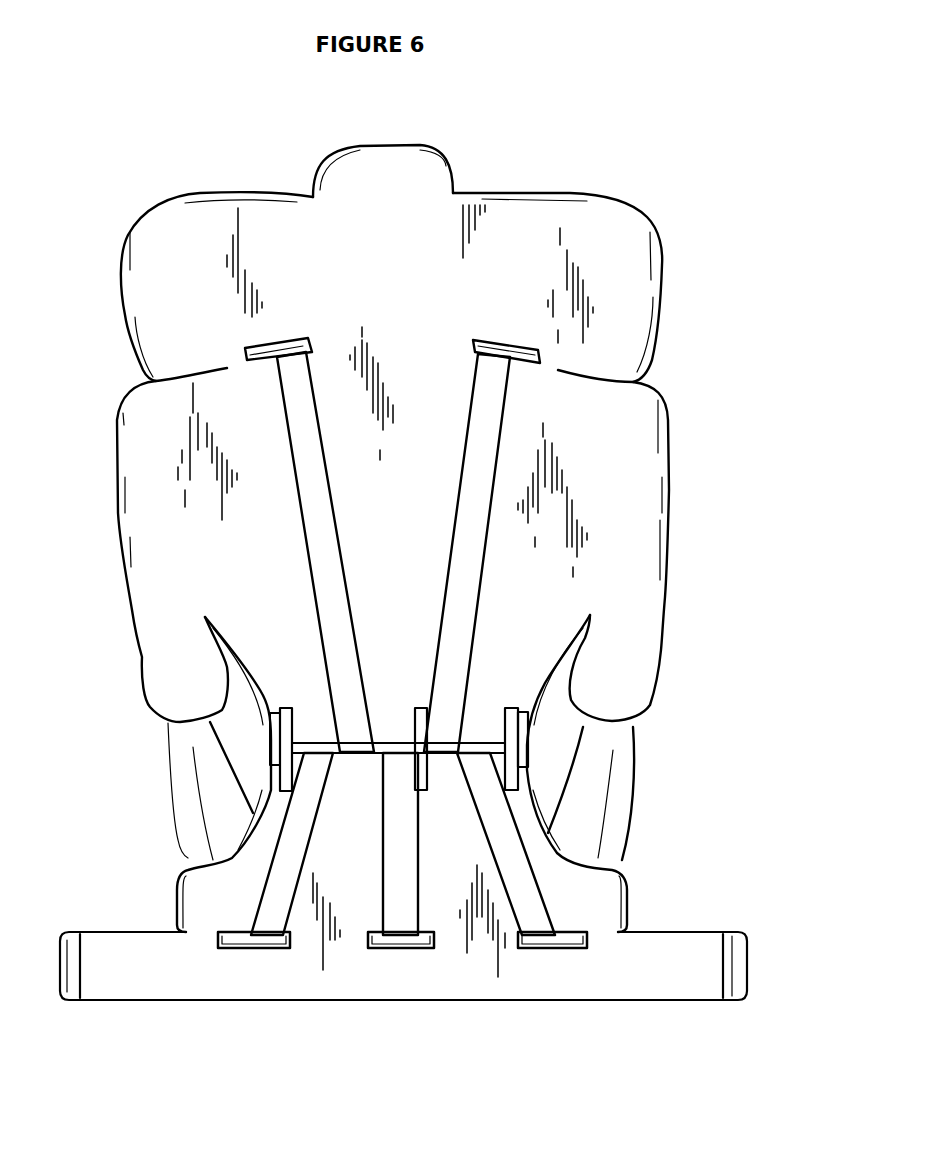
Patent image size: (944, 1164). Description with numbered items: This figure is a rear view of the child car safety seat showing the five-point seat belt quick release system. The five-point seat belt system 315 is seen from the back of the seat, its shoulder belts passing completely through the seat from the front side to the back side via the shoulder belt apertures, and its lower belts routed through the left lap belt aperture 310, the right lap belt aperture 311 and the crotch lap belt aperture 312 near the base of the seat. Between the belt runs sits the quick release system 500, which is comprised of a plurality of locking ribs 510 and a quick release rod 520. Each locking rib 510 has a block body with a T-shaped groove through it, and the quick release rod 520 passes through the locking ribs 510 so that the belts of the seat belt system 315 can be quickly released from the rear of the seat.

The 5-point seat belt system 315 is at (315, 783).
The quick release system 500 is at (267, 733).
The locking ribs 510 is at (270, 708).
The quick release rod 520 is at (268, 740).
The left lap belt aperture 310 is at (243, 950).
The crotch lap belt aperture 312 is at (399, 950).
The right lap belt aperture 311 is at (577, 952).